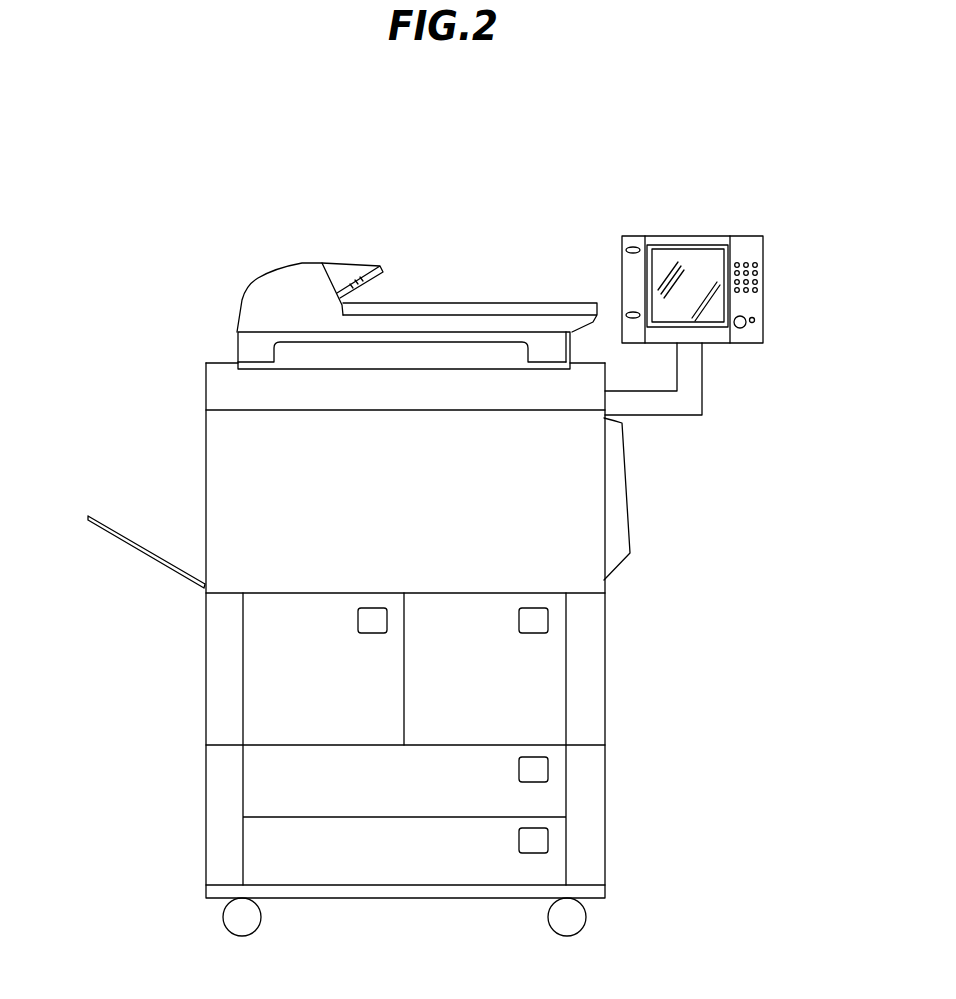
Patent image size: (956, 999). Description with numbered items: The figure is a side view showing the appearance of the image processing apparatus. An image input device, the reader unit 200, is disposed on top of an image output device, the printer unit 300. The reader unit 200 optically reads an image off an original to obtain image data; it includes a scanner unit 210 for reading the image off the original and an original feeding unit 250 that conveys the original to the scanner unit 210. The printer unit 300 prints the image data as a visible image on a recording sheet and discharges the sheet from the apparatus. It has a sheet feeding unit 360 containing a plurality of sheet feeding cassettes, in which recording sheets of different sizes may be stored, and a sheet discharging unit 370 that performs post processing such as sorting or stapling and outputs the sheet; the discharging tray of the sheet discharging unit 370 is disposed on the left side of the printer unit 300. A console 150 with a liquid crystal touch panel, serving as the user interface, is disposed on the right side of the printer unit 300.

The console 150 is at (763, 258).
The reader unit 200 is at (447, 278).
The scanner unit 210 is at (248, 347).
The original feeding unit 250 is at (348, 270).
The printer unit 300 is at (194, 676).
The sheet feeding unit 360 is at (540, 678).
The sheet discharging unit 370 is at (136, 540).